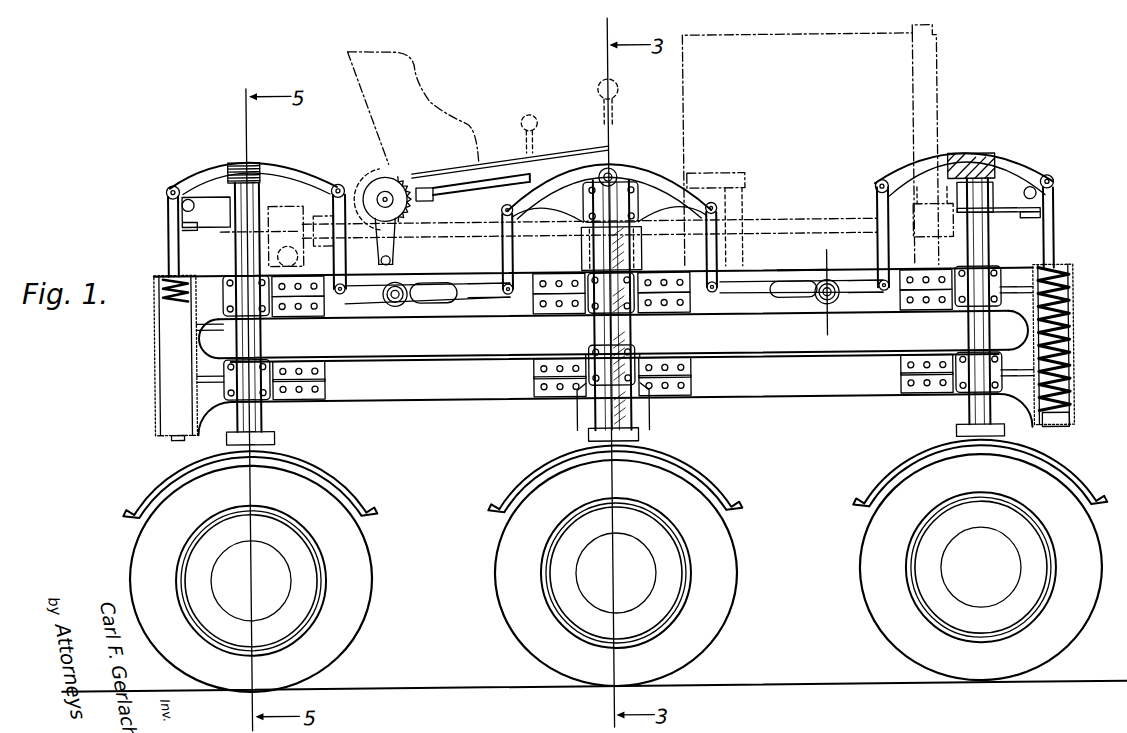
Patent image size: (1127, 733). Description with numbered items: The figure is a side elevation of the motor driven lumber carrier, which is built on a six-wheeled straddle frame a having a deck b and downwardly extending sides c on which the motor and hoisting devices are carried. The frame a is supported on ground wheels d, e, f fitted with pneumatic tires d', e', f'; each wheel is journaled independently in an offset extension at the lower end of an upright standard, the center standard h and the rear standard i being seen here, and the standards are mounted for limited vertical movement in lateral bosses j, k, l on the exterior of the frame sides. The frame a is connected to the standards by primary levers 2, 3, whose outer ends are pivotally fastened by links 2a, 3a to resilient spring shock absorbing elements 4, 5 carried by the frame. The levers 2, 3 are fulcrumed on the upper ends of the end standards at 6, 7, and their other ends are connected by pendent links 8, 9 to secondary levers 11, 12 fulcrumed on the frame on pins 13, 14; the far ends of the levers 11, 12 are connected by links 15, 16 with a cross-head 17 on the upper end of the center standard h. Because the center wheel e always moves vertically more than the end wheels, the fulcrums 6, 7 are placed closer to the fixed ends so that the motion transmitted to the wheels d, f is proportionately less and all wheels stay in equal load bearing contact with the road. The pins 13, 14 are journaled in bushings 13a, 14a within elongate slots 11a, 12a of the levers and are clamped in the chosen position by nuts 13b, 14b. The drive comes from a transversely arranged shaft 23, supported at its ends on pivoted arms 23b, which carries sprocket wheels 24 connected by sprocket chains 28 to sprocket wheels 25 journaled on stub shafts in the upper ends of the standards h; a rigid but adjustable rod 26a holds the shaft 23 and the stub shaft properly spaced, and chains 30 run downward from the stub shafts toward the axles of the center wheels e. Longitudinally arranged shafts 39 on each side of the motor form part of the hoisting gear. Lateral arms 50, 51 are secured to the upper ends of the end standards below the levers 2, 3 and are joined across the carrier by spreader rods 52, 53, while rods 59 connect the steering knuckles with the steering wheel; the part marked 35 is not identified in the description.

The primary lever 2 is at (280, 162).
The link 2a is at (170, 241).
The primary lever 3 is at (1023, 167).
The link 3a is at (1056, 234).
The resilient spring shock absorbing element 4 is at (159, 300).
The resilient spring shock absorbing element 5 is at (1075, 320).
The fulcrum 6 is at (238, 160).
The fulcrum 7 is at (975, 157).
The pendent link 8 is at (338, 186).
The pendent link 9 is at (262, 420).
The secondary lever 11 is at (372, 300).
The elongate slot 11a is at (486, 308).
The secondary lever 12 is at (772, 301).
The elongate slot 12a is at (769, 298).
The pin 13 is at (393, 305).
The bushing 13a is at (437, 302).
The nut 13b is at (394, 300).
The pin 14 is at (819, 301).
The bushing 14a is at (844, 295).
The nut 14b is at (789, 296).
The link 15 is at (509, 246).
The link 16 is at (716, 250).
The cross-head 17 is at (651, 186).
The transversely arranged shaft 23 is at (386, 193).
The pivoted arm 23b is at (393, 250).
The sprocket wheel 24 is at (401, 185).
The sprocket wheel 25 is at (616, 166).
The rigid adjustable rod 26a is at (481, 127).
The sprocket chain 28 is at (474, 160).
The chain 30 is at (652, 410).
The rear body bracket 35 is at (930, 210).
The longitudinally arranged shaft 39 is at (818, 220).
The lateral arm 50 is at (222, 193).
The lateral arm 51 is at (1006, 214).
The spreader rod 52 is at (185, 201).
The spreader rod 53 is at (1041, 196).
The steering rod 59 is at (700, 175).
The straddle frame a is at (486, 403).
The deck b is at (795, 268).
The downwardly extending sides c is at (426, 390).
The ground wheel d is at (262, 571).
The pneumatic tire d' is at (310, 580).
The ground wheel e is at (597, 566).
The pneumatic tire e' is at (555, 574).
The ground wheel f is at (959, 560).
The pneumatic tire f' is at (920, 568).
The upright standard h is at (615, 253).
The upright standard i is at (966, 409).
The lateral boss j is at (261, 330).
The lateral boss k is at (641, 322).
The lateral boss l is at (960, 316).